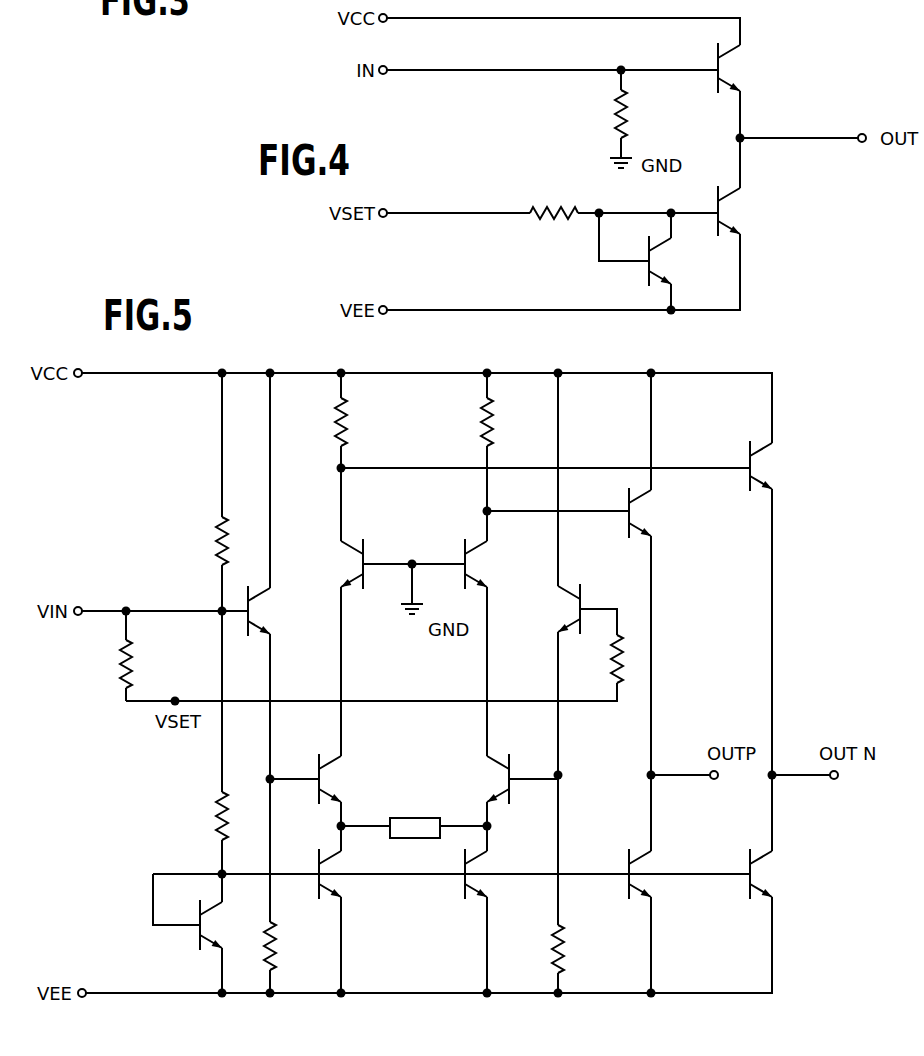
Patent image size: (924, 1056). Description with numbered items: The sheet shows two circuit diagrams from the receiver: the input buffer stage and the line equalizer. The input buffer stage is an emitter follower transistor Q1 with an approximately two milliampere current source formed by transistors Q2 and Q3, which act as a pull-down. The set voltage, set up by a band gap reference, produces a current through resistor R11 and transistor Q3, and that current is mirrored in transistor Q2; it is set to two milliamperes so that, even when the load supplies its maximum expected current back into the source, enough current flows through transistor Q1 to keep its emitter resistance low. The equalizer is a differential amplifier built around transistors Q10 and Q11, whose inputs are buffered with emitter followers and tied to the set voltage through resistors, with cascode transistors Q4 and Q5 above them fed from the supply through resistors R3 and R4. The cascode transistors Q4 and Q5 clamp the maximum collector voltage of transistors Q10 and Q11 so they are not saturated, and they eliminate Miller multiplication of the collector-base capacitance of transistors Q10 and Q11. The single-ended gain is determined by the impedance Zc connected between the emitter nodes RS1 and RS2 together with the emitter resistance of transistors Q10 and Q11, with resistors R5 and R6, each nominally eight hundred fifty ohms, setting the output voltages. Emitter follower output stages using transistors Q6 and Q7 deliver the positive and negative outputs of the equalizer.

In FIG. 4, the emitter follower transistor Q1 is at (744, 68).
In FIG. 4, the pull-down transistor Q2 is at (744, 211).
In FIG. 4, the pull-down transistor Q3 is at (645, 261).
In FIG. 4, the resistor R11 is at (554, 227).
In FIG. 5, the cascode transistor Q4 is at (490, 564).
In FIG. 5, the cascode transistor Q5 is at (342, 564).
In FIG. 5, the emitter follower transistor Q6 is at (655, 513).
In FIG. 5, the emitter follower transistor Q7 is at (777, 466).
In FIG. 5, the differential amplifier transistor Q10 is at (326, 779).
In FIG. 5, the differential amplifier transistor Q11 is at (511, 779).
In FIG. 5, the resistor R3 is at (358, 420).
In FIG. 5, the resistor R4 is at (505, 442).
In FIG. 5, the resistor R5 is at (199, 492).
In FIG. 5, the resistor R6 is at (200, 742).
In FIG. 5, the emitter node RS1 is at (321, 826).
In FIG. 5, the emitter node RS2 is at (487, 824).
In FIG. 5, the impedance Zc is at (414, 841).